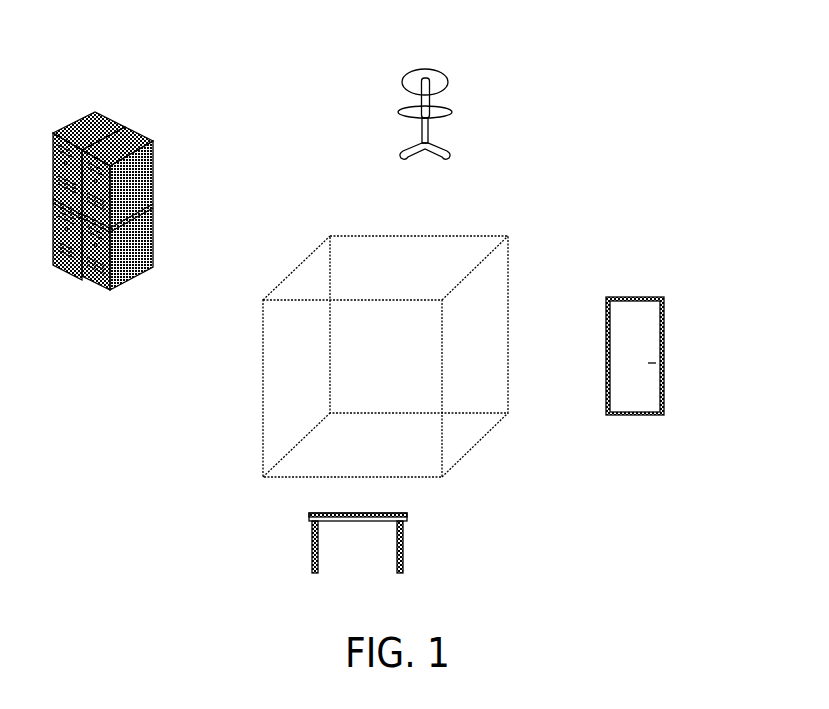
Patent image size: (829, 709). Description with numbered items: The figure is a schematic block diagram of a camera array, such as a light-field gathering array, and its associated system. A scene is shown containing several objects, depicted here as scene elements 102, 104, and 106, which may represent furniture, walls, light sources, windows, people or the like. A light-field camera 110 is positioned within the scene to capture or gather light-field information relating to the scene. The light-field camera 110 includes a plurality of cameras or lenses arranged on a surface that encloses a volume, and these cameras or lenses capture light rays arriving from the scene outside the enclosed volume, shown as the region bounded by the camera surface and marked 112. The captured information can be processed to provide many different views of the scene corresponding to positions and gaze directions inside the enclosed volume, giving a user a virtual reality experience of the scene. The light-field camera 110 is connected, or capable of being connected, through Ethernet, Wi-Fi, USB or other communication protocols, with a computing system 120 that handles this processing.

The scene element 102 is at (433, 69).
The scene element 104 is at (664, 347).
The scene element 106 is at (403, 532).
The light-field camera 110 is at (263, 390).
The interior space of environment 112 is at (488, 369).
The computing system 120 is at (88, 110).